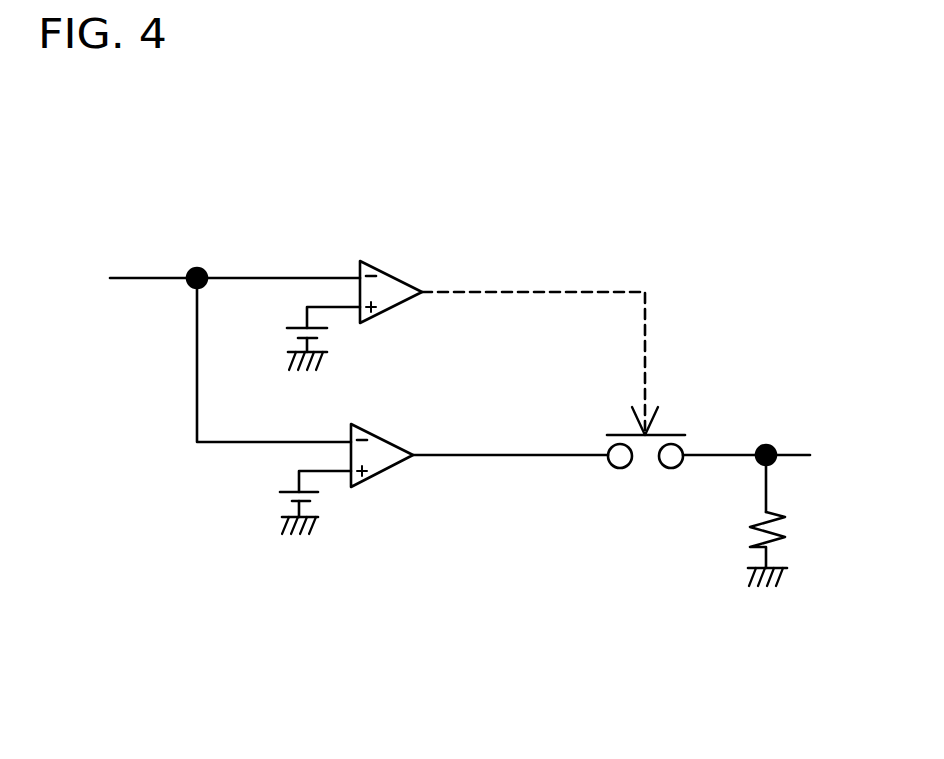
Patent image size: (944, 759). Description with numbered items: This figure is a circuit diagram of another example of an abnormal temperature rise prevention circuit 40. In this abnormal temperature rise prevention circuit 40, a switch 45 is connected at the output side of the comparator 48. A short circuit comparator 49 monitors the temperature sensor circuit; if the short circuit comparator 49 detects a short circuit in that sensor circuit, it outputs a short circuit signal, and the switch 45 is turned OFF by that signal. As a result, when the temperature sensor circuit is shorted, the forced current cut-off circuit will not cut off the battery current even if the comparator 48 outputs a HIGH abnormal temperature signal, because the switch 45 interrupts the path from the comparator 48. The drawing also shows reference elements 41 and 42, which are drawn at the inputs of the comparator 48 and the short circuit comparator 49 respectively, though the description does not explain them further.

The abnormal temperature rise prevention circuit 40 is at (460, 367).
The reference voltage source (capacitor) 41 is at (293, 491).
The reference voltage source (capacitor) 42 is at (328, 329).
The switch 45 is at (680, 418).
The comparator 48 is at (385, 472).
The short circuit comparator 49 is at (400, 278).